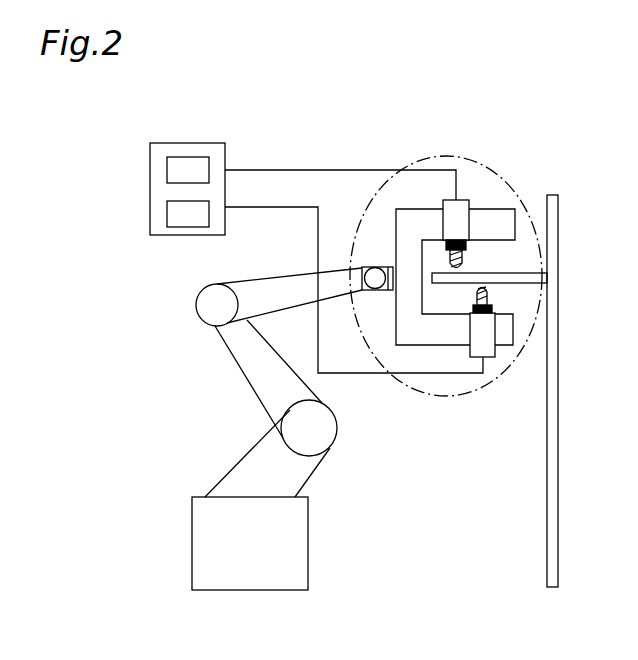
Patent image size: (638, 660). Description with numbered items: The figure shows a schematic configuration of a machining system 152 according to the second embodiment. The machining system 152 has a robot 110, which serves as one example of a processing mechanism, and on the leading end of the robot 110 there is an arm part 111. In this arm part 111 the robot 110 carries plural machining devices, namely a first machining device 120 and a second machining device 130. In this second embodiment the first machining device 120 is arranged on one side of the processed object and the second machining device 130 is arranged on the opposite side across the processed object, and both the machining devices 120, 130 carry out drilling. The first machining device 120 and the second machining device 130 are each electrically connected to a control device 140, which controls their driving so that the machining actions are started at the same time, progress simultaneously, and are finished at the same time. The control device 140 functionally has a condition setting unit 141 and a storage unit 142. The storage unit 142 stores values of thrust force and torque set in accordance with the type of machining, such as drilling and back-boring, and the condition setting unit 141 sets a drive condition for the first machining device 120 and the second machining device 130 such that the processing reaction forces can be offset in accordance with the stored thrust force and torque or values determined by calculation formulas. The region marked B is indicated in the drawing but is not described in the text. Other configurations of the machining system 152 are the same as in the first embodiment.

The robot 110 is at (242, 460).
The arm part 111 is at (402, 321).
The first machining device 120 is at (470, 219).
The second machining device 130 is at (493, 331).
The control device 140 is at (144, 193).
The condition setting unit 141 is at (190, 157).
The storage unit 142 is at (170, 227).
The machining system 152 is at (318, 370).
The region B is at (528, 338).